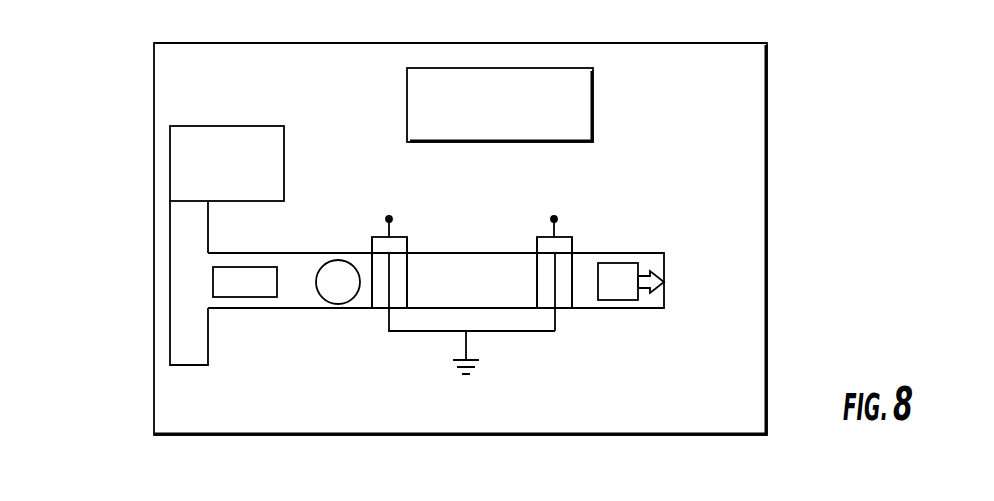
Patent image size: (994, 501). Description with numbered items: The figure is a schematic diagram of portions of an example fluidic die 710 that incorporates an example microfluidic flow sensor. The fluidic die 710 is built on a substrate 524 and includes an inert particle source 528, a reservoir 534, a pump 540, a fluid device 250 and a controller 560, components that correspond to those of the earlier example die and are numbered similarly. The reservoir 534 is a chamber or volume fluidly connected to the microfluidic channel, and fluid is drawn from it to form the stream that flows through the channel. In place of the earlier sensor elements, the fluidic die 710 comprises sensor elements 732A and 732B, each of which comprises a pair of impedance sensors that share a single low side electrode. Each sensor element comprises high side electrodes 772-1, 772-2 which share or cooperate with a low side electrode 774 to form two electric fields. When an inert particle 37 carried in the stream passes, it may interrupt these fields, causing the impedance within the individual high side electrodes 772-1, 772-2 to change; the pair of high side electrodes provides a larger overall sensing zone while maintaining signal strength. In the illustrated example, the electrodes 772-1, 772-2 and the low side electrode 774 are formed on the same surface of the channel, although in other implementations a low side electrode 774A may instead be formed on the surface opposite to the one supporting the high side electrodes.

The fluidic die 710 is at (76, 86).
The substrate 524 is at (767, 118).
The controller 560 is at (470, 68).
The inert particle source 528 is at (197, 126).
The reservoir 534 is at (170, 267).
The inert particle 37 is at (318, 277).
The pump 540 is at (245, 297).
The sensor element 732A is at (368, 214).
The sensor element 732B is at (585, 210).
The high side electrode 772-1 is at (367, 295).
The high side electrode 772-2 is at (408, 275).
The low side electrode 774A is at (388, 295).
The low side electrode 774 is at (557, 300).
The fluid device 250 is at (625, 263).